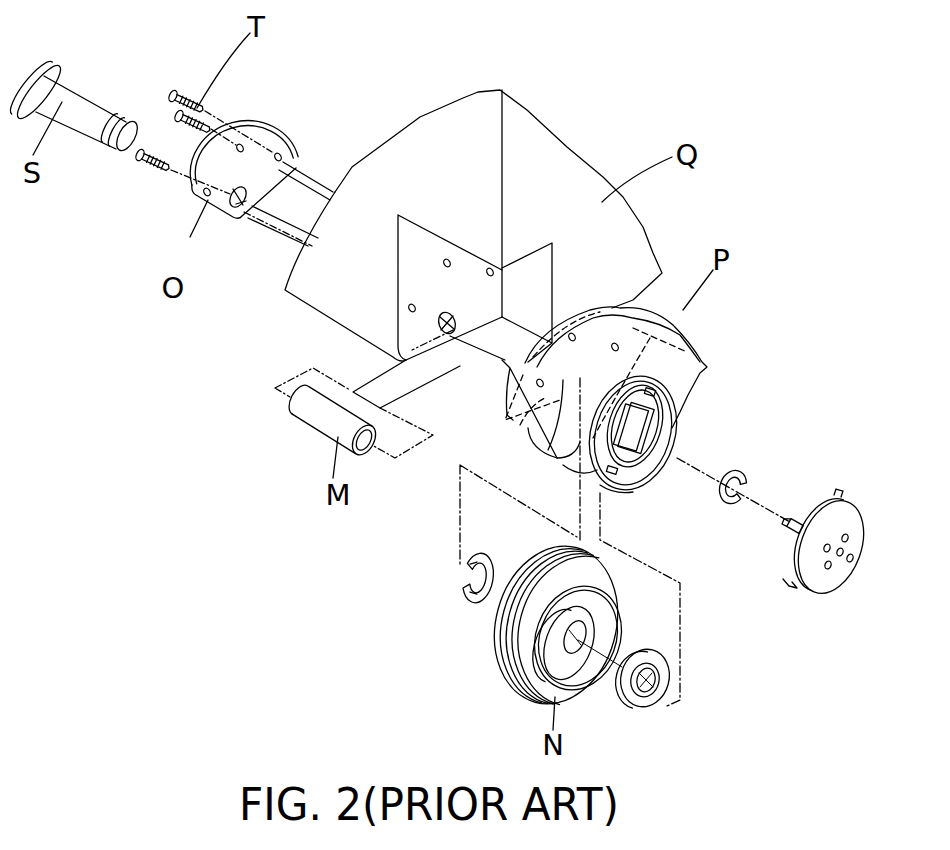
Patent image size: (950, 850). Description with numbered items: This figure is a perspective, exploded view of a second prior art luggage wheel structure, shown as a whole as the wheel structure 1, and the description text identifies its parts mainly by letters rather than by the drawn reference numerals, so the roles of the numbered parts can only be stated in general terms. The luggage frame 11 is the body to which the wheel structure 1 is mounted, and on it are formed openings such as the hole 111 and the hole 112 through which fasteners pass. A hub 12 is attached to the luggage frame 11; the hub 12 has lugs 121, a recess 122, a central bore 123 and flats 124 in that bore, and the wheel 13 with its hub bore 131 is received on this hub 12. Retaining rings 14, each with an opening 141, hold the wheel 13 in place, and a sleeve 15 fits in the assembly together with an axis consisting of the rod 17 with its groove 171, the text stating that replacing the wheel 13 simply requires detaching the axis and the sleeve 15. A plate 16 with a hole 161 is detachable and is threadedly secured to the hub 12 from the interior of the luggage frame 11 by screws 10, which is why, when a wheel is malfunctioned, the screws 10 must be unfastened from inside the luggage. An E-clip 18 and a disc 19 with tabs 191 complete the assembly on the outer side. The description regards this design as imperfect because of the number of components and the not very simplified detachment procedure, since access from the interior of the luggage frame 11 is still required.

The wheel assembly 1 is at (704, 320).
The screws 10 is at (197, 103).
The body 11 is at (628, 232).
The hole 111 is at (443, 348).
The screw 112 is at (450, 340).
The housing 12 is at (657, 300).
The lugs 121 is at (637, 492).
The recess 122 is at (567, 470).
The square bore 123 is at (523, 427).
The flats 124 is at (657, 395).
The wheel 13 is at (625, 603).
The hub bore 131 is at (575, 650).
The retaining rings 14 is at (634, 707).
The ring opening 141 is at (653, 675).
The sleeve 15 is at (322, 422).
The plate 16 is at (287, 123).
The hole 161 is at (235, 218).
The handle rod 17 is at (62, 103).
The groove 171 is at (103, 140).
The E-clip 18 is at (747, 470).
The disc 19 is at (872, 514).
The tabs 191 is at (840, 488).